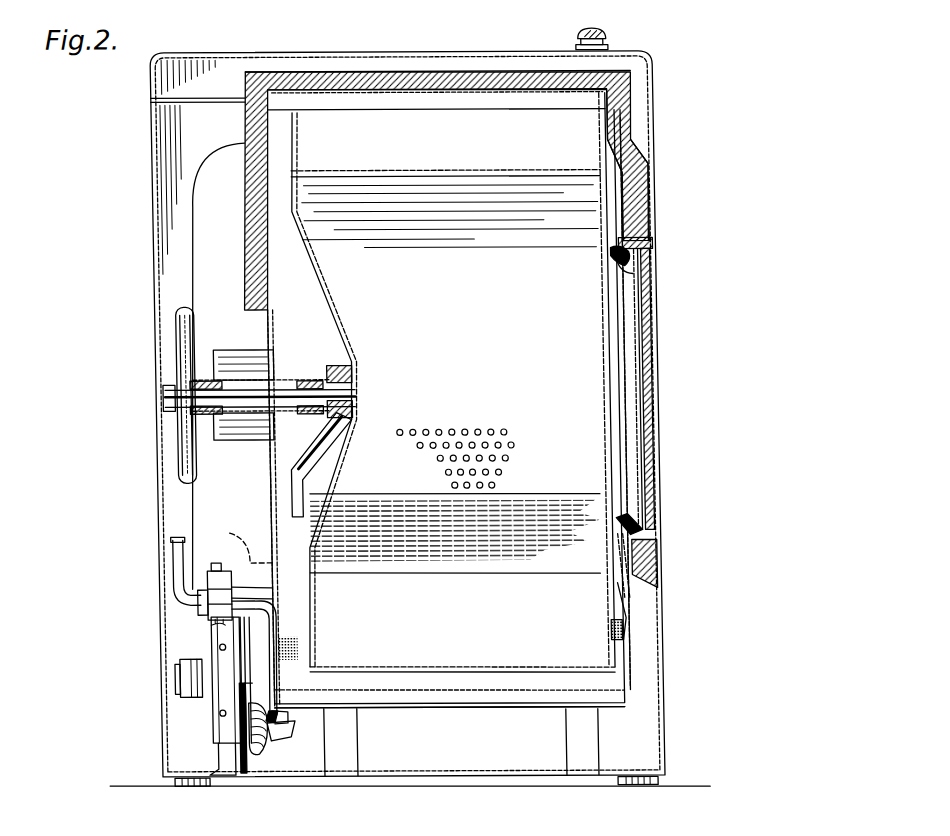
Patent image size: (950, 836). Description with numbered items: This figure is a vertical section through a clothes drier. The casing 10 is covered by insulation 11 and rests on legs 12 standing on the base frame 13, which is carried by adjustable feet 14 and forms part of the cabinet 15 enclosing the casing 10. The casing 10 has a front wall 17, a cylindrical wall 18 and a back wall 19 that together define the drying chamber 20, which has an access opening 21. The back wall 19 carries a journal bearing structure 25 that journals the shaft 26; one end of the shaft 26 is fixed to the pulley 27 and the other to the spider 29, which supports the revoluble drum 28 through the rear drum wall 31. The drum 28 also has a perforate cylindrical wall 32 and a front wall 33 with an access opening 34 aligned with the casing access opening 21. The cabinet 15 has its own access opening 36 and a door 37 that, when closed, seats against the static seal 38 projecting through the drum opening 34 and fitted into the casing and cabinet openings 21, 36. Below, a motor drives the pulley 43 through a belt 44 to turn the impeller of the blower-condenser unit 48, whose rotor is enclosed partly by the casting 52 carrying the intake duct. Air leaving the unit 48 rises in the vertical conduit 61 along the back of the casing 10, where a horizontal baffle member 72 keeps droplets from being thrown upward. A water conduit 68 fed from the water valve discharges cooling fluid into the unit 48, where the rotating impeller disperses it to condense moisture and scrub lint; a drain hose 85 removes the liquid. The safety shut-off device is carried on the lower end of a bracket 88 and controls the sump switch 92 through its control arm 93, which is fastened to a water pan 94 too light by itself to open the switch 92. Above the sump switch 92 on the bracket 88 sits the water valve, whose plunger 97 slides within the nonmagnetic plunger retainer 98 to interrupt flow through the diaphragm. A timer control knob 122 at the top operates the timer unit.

The casing 10 is at (362, 91).
The insulation 11 is at (509, 70).
The legs 12 is at (344, 741).
The base frame 13 is at (393, 782).
The adjustable feet 14 is at (176, 789).
The cabinet 15 is at (264, 54).
The front wall 17 is at (611, 139).
The cylindrical wall 18 is at (420, 90).
The back wall 19 is at (263, 220).
The drying chamber 20 is at (468, 680).
The access opening 21 is at (651, 281).
The journal bearing structure 25 is at (244, 449).
The shaft 26 is at (233, 391).
The pulley 27 is at (172, 445).
The revoluble drum 28 is at (426, 754).
The spider 29 is at (284, 489).
The rear drum wall 31 is at (299, 617).
The perforate cylindrical wall 32 is at (444, 418).
The front wall 33 is at (599, 602).
The access opening 34 is at (608, 254).
The access opening 36 is at (646, 249).
The door 37 is at (641, 364).
The static seal 38 is at (628, 517).
The pulley 43 is at (185, 701).
The belt 44 is at (188, 659).
The blower-condenser unit 48 is at (184, 738).
The casting 52 is at (253, 669).
The vertical conduit 61 is at (230, 171).
The water conduit 68 is at (266, 613).
The horizontal baffle member 72 is at (246, 547).
The drain hose 85 is at (279, 717).
The bracket 88 is at (203, 709).
The sump switch 92 is at (231, 685).
The switch control arm 93 is at (244, 751).
The water pan 94 is at (273, 737).
The valve plunger 97 is at (218, 583).
The plunger retainer 98 is at (218, 552).
The timer control knob 122 is at (599, 39).